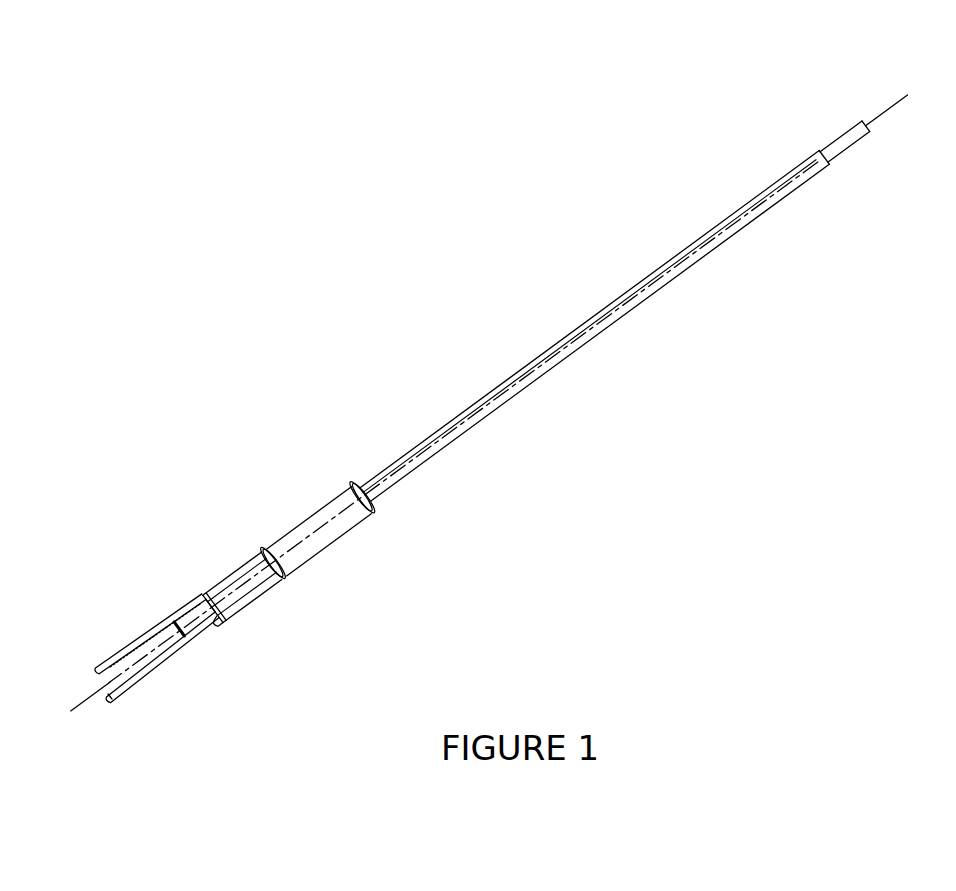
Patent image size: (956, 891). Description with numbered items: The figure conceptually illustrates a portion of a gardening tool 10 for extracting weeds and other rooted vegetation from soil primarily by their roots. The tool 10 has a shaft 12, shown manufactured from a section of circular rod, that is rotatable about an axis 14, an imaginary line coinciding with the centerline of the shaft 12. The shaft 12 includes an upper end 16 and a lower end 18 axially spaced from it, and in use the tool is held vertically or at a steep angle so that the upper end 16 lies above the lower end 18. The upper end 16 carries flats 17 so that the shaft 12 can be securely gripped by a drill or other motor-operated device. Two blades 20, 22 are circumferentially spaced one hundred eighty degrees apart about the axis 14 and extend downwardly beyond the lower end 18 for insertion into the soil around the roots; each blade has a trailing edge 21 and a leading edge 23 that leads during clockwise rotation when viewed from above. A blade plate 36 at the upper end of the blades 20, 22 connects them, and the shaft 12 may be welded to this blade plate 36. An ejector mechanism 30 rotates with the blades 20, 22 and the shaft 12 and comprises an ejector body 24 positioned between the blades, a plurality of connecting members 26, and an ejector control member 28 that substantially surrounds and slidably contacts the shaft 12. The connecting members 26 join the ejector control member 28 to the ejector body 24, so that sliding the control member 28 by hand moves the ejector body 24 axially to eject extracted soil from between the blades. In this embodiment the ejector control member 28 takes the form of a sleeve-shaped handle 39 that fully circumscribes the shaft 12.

The gardening tool 10 is at (570, 465).
The shaft 12 is at (623, 312).
The axis 14 is at (885, 113).
The upper end 16 is at (858, 140).
The flats 17 is at (848, 133).
The lower end 18 is at (248, 585).
The blade 20 is at (137, 684).
The trailing edge 21 is at (105, 690).
The blade 22 is at (137, 642).
The leading edge 23 is at (148, 622).
The ejector body 24 is at (177, 652).
The connecting members 26 is at (273, 585).
The ejector control member 28 is at (398, 551).
The ejector mechanism 30 is at (354, 433).
The blade plate 36 is at (214, 616).
The sleeve-shaped handle 39 is at (310, 525).